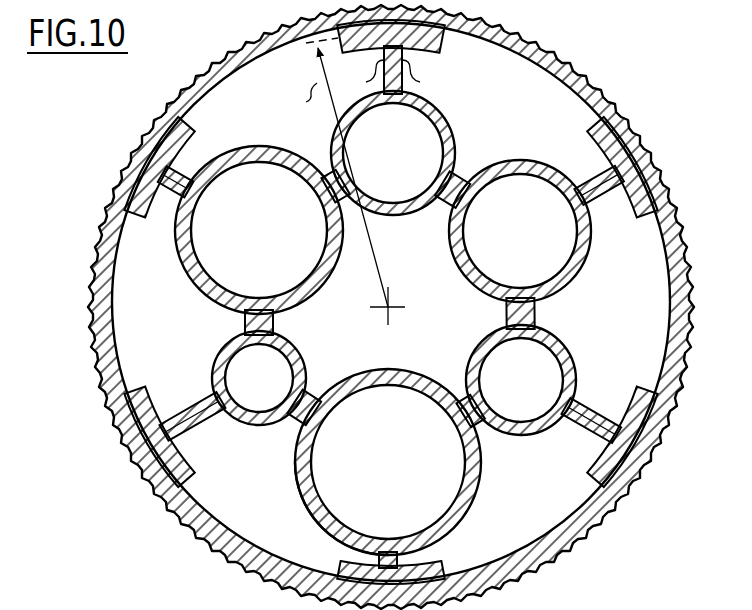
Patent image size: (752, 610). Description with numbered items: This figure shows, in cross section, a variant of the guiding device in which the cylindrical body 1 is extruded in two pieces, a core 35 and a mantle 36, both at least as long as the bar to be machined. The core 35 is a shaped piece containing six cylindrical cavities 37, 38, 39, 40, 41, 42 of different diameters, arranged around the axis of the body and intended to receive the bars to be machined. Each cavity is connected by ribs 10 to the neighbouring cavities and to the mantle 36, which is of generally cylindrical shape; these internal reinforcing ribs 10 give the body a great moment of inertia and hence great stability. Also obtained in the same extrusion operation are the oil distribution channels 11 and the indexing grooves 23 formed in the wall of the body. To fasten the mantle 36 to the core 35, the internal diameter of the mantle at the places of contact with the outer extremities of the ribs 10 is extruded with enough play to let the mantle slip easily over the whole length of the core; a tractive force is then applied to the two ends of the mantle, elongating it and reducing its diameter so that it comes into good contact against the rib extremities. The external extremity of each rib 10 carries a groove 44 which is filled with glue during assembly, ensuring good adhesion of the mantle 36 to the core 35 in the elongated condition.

The cylindrical body 1 is at (102, 430).
The ribs 10 is at (182, 170).
The oil distribution channels 11 is at (477, 197).
The indexing grooves 23 is at (137, 167).
The core 35 is at (302, 503).
The mantle 36 is at (598, 100).
The cylindrical cavity 37 is at (378, 167).
The cylindrical cavity 38 is at (270, 255).
The cylindrical cavity 39 is at (244, 405).
The cylindrical cavity 40 is at (377, 490).
The cylindrical cavity 41 is at (521, 380).
The cylindrical cavity 42 is at (505, 252).
The groove 44 is at (621, 167).